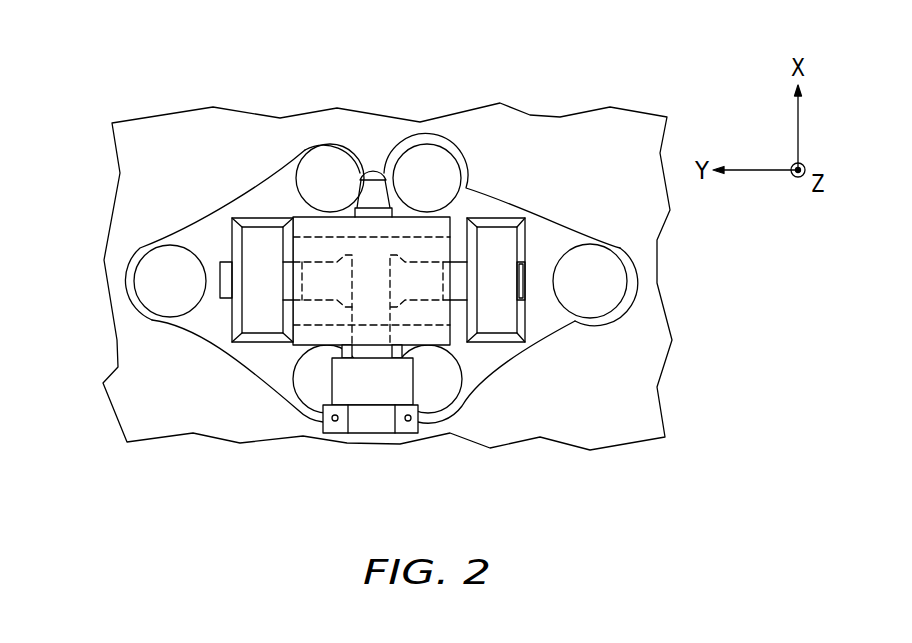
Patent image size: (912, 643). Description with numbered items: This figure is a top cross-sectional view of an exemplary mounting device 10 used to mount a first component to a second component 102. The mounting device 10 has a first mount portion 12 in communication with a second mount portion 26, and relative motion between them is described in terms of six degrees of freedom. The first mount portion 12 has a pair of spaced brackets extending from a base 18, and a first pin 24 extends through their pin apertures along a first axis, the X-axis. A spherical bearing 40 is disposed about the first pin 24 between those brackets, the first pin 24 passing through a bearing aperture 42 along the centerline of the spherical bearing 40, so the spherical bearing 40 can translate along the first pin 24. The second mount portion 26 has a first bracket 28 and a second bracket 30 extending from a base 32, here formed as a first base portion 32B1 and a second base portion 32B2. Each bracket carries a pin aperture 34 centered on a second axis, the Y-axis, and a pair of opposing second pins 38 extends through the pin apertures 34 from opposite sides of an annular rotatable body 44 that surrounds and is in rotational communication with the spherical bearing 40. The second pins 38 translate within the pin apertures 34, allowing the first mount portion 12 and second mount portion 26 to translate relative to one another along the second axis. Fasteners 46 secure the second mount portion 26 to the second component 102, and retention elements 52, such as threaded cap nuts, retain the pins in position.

The mounting device 10 is at (573, 88).
The second component 102 is at (644, 215).
The first mount portion 12 is at (302, 343).
The base 18 is at (288, 318).
The first pin 24 is at (373, 167).
The second mount portion 26 is at (558, 220).
The first bracket 28 is at (292, 257).
The second bracket 30 is at (500, 322).
The base 32 is at (198, 342).
The first base portion 32B1 is at (193, 318).
The second base portion 32B2 is at (553, 322).
The pin aperture 34 is at (235, 258).
The second pins 38 is at (260, 243).
The spherical bearing 40 is at (348, 252).
The bearing aperture 42 is at (384, 230).
The rotatable body 44 is at (423, 282).
The fasteners 46 is at (157, 282).
The retention elements 52 is at (357, 433).